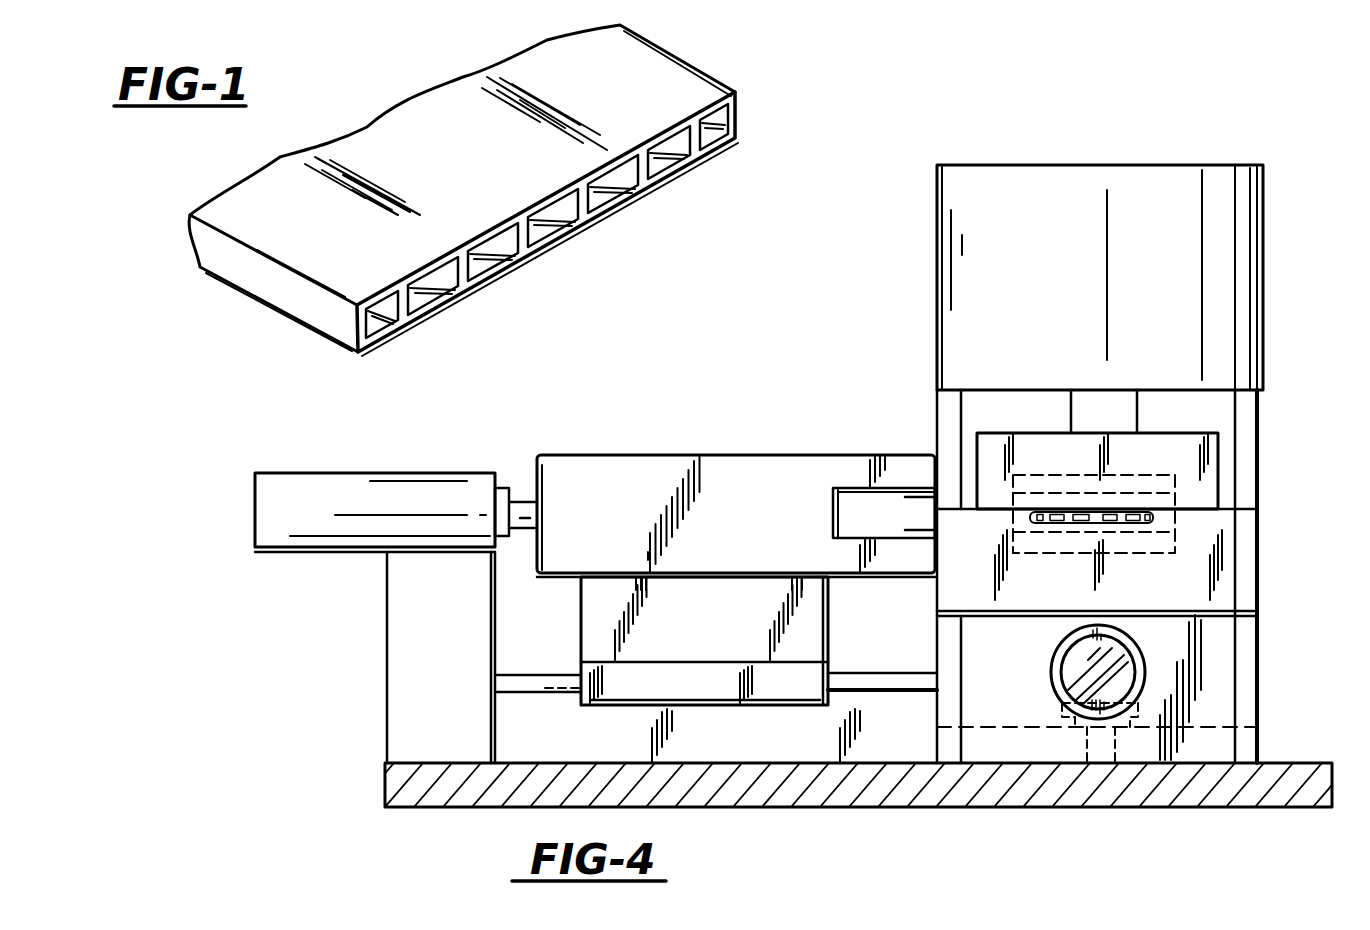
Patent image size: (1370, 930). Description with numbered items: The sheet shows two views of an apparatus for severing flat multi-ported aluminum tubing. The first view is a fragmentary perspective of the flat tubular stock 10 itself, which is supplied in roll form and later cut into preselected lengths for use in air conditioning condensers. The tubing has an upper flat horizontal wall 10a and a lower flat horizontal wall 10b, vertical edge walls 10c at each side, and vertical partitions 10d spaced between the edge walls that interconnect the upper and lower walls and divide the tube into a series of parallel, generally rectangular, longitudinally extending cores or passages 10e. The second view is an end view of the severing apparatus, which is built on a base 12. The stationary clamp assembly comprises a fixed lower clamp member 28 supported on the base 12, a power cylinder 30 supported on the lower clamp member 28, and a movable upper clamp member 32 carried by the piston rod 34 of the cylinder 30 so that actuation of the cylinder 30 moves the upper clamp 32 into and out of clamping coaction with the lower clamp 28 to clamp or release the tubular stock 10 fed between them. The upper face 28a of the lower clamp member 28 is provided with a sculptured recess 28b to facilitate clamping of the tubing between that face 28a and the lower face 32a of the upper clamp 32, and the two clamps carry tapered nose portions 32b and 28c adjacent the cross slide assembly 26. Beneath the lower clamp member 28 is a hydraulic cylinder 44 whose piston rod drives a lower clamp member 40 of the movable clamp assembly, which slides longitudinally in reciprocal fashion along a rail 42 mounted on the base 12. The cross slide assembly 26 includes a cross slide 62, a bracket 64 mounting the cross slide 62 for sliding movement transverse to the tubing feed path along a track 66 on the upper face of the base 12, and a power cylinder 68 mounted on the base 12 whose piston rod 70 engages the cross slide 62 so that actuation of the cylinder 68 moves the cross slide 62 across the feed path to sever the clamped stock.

In FIG. 1, the flat tubular stock 10 is at (533, 209).
In FIG. 4, the flat tubular stock 10 is at (1040, 530).
In FIG. 1, the upper flat horizontal wall 10a is at (700, 88).
In FIG. 1, the lower flat horizontal wall 10b is at (667, 183).
In FIG. 1, the vertical edge wall 10c is at (352, 326).
In FIG. 1, the vertical partition 10d is at (413, 297).
In FIG. 1, the core or passage 10e is at (548, 226).
In FIG. 4, the base 12 is at (1313, 757).
In FIG. 4, the cross slide assembly 26 is at (698, 445).
In FIG. 4, the fixed lower clamp member 28 is at (1130, 545).
In FIG. 4, the upper face of lower clamp member 28a is at (1190, 503).
In FIG. 4, the sculptured recess 28b is at (1094, 522).
In FIG. 4, the tapered nose portion 28c is at (1107, 550).
In FIG. 4, the power cylinder 30 is at (1268, 288).
In FIG. 4, the movable upper clamp member 32 is at (1130, 456).
In FIG. 4, the lower face of upper clamp 32a is at (983, 517).
In FIG. 4, the tapered nose portion 32b is at (1148, 475).
In FIG. 4, the piston rod 34 is at (1074, 410).
In FIG. 4, the lower clamp member 40 is at (1217, 732).
In FIG. 4, the rail 42 is at (1128, 745).
In FIG. 4, the hydraulic cylinder 44 is at (1057, 677).
In FIG. 4, the cross slide 62 is at (736, 462).
In FIG. 4, the bracket 64 is at (732, 634).
In FIG. 4, the track 66 is at (750, 749).
In FIG. 4, the power cylinder 68 is at (356, 465).
In FIG. 4, the piston rod 70 is at (519, 501).